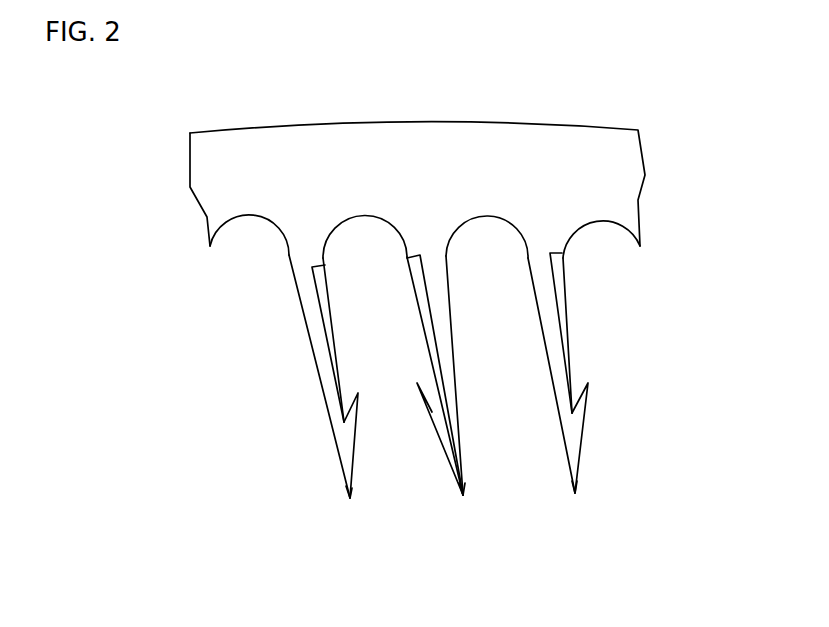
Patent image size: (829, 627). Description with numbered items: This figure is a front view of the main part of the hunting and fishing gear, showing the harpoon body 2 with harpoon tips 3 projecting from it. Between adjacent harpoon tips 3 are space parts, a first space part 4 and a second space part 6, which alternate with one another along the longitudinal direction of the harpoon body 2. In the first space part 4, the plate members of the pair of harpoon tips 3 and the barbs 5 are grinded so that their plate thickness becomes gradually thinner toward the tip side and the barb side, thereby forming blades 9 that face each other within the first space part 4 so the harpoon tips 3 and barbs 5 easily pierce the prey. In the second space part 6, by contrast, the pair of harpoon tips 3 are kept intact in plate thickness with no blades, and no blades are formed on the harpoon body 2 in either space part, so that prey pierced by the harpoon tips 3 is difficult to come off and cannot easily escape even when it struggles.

The harpoon body 2 is at (587, 157).
The harpoon tip 3 is at (353, 467).
The first space part 4 is at (365, 242).
The barb 5 is at (416, 403).
The second space part 6 is at (473, 228).
The blade 9 is at (569, 378).